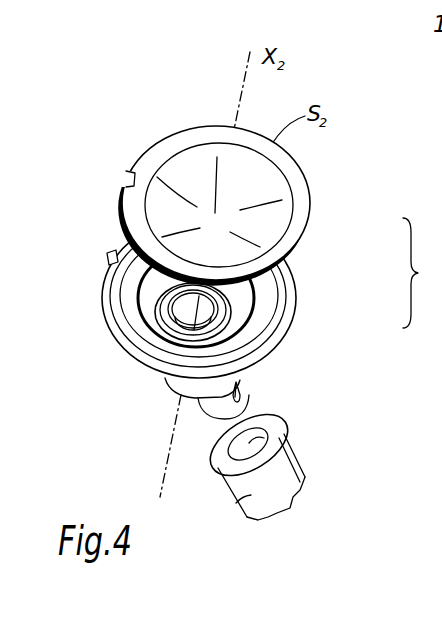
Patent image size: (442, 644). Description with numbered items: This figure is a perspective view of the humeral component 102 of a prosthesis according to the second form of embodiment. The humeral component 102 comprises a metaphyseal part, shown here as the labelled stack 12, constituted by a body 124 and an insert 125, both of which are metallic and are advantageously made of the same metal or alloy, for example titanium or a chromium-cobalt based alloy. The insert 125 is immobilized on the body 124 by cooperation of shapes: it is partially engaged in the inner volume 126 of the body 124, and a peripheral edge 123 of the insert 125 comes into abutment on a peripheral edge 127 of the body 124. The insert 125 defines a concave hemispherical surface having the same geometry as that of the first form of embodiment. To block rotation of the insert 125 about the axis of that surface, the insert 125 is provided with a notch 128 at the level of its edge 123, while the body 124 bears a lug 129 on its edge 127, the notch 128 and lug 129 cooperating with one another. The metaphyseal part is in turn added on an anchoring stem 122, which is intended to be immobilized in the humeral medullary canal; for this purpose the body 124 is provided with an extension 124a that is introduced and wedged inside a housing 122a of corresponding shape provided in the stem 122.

The humeral component 102 is at (325, 361).
The body stack 12 is at (422, 273).
The anchoring stem 122 is at (237, 504).
The housing 122a is at (298, 483).
The peripheral edge 123 is at (190, 130).
The body 124 is at (267, 350).
The extension 124a is at (243, 398).
The insert 125 is at (303, 200).
The inner volume 126 is at (282, 262).
The peripheral edge 127 is at (274, 290).
The notch 128 is at (122, 178).
The lug 129 is at (110, 258).